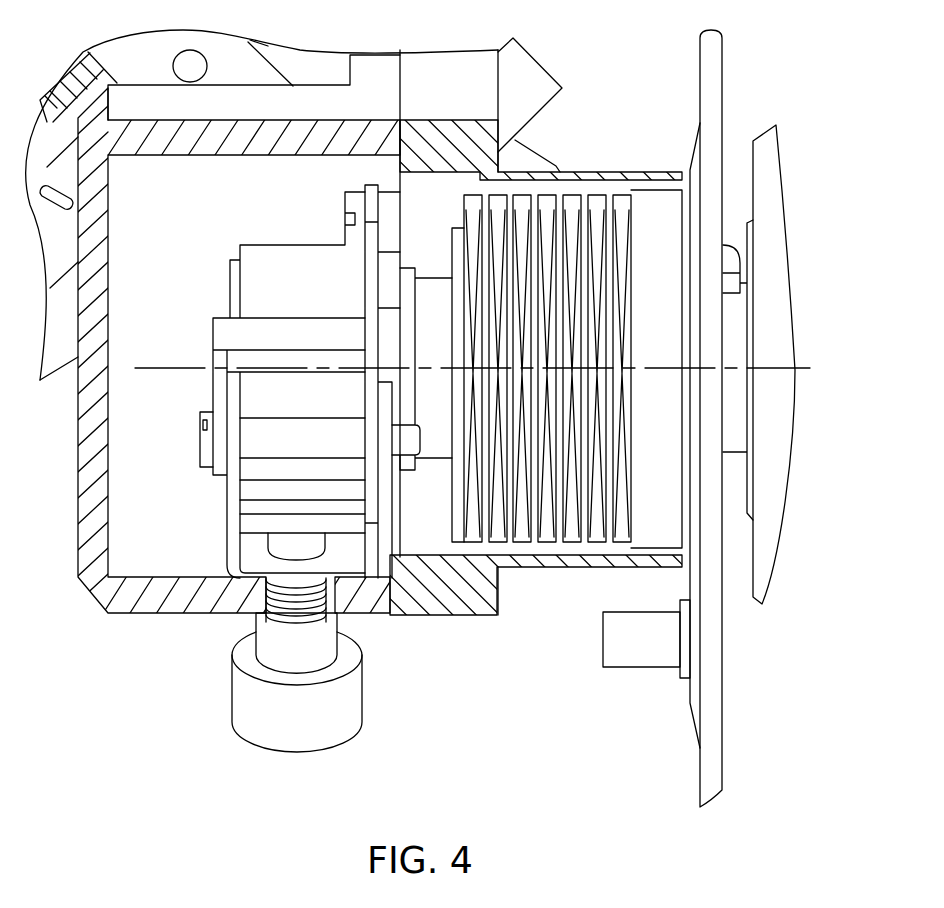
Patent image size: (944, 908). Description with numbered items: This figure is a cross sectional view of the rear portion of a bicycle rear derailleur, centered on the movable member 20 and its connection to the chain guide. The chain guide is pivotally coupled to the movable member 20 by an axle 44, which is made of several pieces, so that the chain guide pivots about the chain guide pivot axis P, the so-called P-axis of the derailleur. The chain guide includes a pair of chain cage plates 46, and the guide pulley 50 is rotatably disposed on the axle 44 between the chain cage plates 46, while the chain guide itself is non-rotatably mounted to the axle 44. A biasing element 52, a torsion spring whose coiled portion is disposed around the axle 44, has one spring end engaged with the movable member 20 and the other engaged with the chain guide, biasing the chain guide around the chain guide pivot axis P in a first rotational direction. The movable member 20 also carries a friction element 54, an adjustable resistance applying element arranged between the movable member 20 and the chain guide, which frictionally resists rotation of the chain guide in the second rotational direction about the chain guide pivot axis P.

The movable member 20 is at (78, 507).
The axle 44 is at (432, 278).
The chain cage plates 46 is at (700, 64).
The guide pulley 50 is at (765, 181).
The biasing element 52 is at (595, 195).
The friction element 54 is at (227, 625).
The chain guide pivot axis P is at (158, 368).